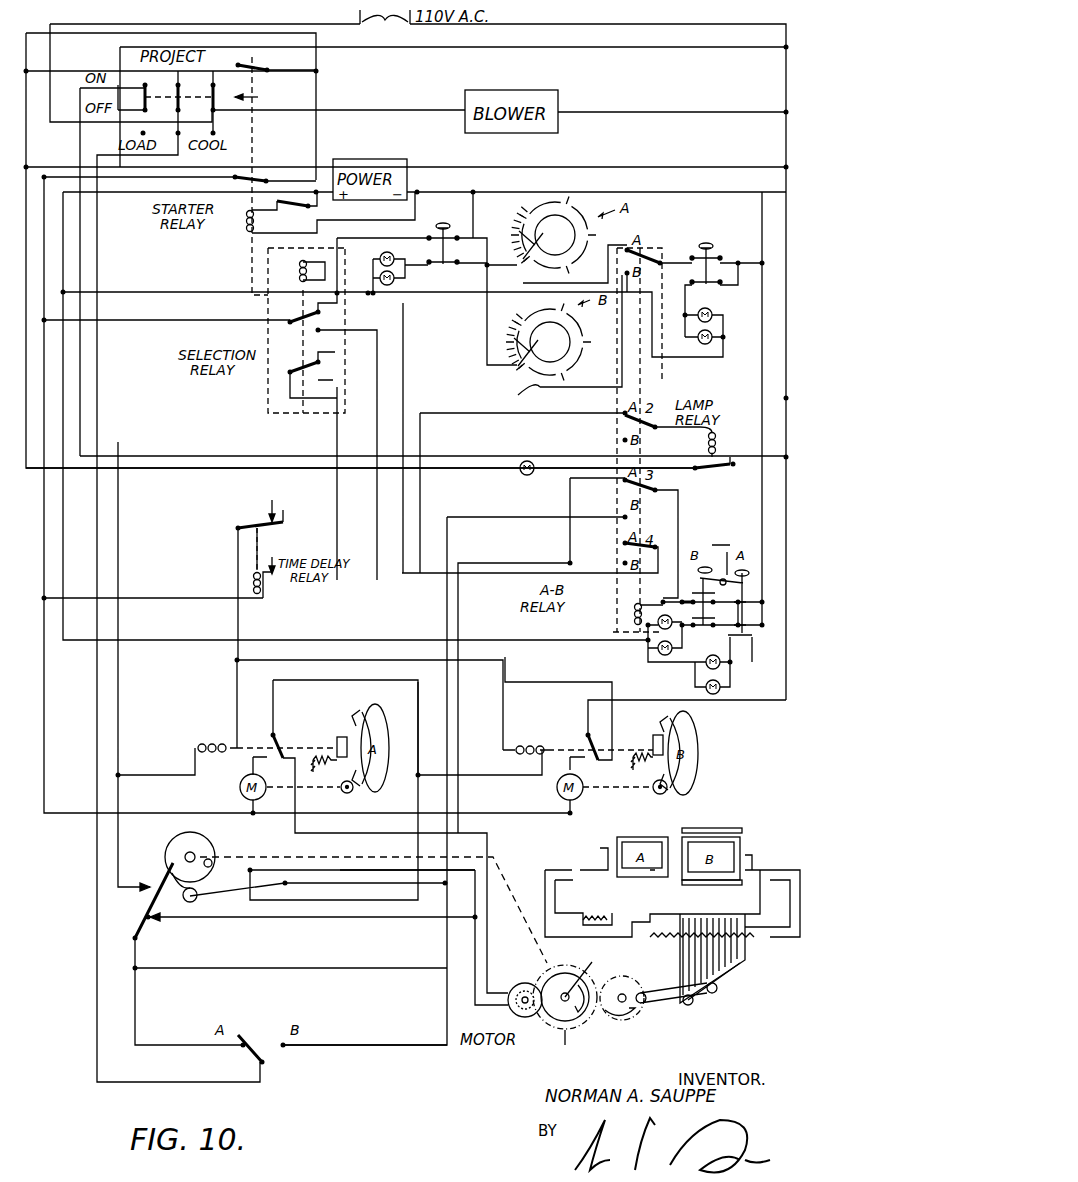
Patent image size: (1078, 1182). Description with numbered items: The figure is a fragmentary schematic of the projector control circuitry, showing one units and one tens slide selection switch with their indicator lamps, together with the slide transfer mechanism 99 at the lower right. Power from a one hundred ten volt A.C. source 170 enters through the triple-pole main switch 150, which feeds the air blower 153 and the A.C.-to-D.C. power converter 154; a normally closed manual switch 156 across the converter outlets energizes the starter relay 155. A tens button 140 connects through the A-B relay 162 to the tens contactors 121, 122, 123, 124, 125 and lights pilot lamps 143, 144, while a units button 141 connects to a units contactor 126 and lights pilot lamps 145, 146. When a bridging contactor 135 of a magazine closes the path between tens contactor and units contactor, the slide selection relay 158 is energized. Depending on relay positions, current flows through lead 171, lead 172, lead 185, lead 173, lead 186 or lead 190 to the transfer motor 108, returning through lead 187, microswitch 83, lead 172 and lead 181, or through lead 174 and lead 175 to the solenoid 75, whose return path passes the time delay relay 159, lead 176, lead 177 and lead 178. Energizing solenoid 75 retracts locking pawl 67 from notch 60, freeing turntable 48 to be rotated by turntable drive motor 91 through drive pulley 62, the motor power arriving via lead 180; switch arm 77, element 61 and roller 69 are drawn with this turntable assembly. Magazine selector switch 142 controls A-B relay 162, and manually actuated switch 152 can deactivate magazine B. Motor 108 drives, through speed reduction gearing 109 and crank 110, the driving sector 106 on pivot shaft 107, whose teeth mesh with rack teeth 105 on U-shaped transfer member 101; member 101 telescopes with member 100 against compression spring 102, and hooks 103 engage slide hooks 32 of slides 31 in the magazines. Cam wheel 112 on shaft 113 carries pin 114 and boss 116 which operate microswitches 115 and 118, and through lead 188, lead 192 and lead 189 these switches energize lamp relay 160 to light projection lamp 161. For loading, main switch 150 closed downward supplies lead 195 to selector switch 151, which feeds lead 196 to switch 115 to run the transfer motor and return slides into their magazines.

The A.C. power source lead 170 is at (381, 36).
The main switch 150 is at (278, 96).
The air blower 153 is at (560, 98).
The power converter 154 is at (370, 157).
The units button 141 is at (452, 218).
The tens contactor 121 is at (535, 212).
The tens contactor 122 is at (557, 205).
The tens contactor 123 is at (585, 218).
The tens contactor 124 is at (600, 250).
The tens button 140 is at (706, 243).
The pilot lamp 145 is at (385, 258).
The pilot lamp 146 is at (395, 283).
The bridging contactor 135 is at (556, 286).
The units contactor 126 is at (530, 265).
The tens contactor 125 is at (535, 292).
The pilot lamp 143 is at (712, 312).
The pilot lamp 144 is at (705, 345).
The manual switch 156 is at (278, 224).
The starter relay 155 is at (241, 238).
The lead 195 is at (97, 258).
The lead 171 is at (190, 325).
The lead 185 is at (403, 321).
The lead 177 is at (422, 395).
The lead 189 is at (80, 403).
The slide selection relay 158 is at (263, 420).
The lead 172 is at (370, 410).
The lamp relay 160 is at (735, 437).
The projection lamp 161 is at (527, 478).
The lead 176 is at (360, 512).
The lead 173 is at (530, 520).
The lead 186 is at (495, 573).
The lead 178 is at (160, 598).
The time delay relay 159 is at (268, 592).
The lead 175 is at (237, 623).
The magazine selector switch 142 is at (711, 534).
The manually actuated switch 152 is at (678, 575).
The A-B relay 162 is at (601, 624).
The lead 188 is at (118, 673).
The solenoid 75 is at (216, 740).
The switch arm 77 is at (248, 740).
The microswitch 83 is at (278, 740).
The shutter blade 61 is at (355, 715).
The locking pawl 67 is at (337, 745).
The notch 60 is at (360, 712).
The turntable 48 is at (380, 740).
The turntable drive motor 91 is at (240, 790).
The roller 69 is at (340, 790).
The drive pulley 62 is at (355, 790).
The lead 181 is at (750, 702).
The lead 174 is at (468, 775).
The lead 180 is at (535, 815).
The transfer mechanism 99 is at (539, 873).
The lamp housing 31 is at (609, 841).
The slide hook 32 is at (603, 865).
The U-shaped transfer member 100 is at (555, 893).
The hook 103 is at (608, 878).
The compression spring 102 is at (600, 918).
The U-shaped transfer member 101 is at (790, 903).
The rack teeth 105 is at (742, 935).
The driving sector 106 is at (740, 968).
The pivot shaft 107 is at (695, 1002).
The shaft 113 is at (182, 838).
The crank 110 is at (660, 985).
The slide transfer motor 108 is at (525, 962).
The speed reduction gearing 109 is at (568, 1036).
The cam wheel 112 is at (210, 835).
The pin 114 is at (213, 862).
The boss 116 is at (240, 890).
The microswitch 118 is at (273, 899).
The lead 192 is at (336, 900).
The lead 187 is at (488, 905).
The microswitch 115 is at (155, 934).
The lead 196 is at (135, 1003).
The magazine selector switch 151 is at (250, 1035).
The lead 190 is at (375, 870).